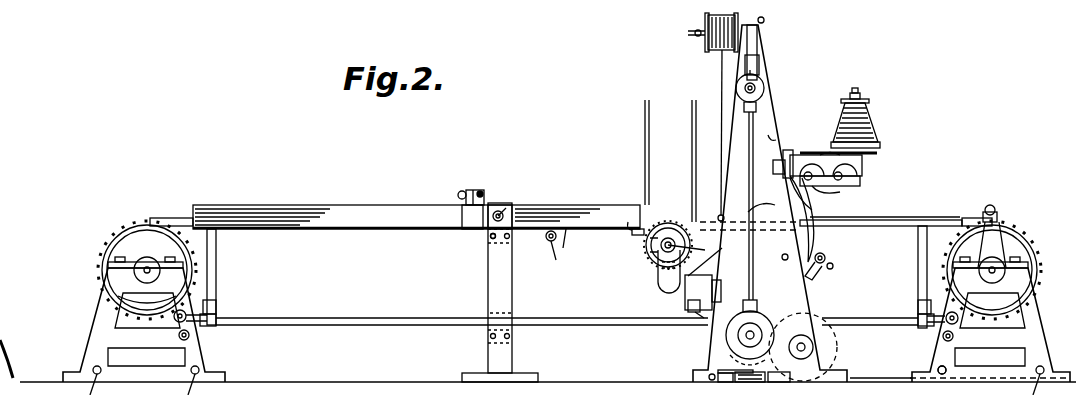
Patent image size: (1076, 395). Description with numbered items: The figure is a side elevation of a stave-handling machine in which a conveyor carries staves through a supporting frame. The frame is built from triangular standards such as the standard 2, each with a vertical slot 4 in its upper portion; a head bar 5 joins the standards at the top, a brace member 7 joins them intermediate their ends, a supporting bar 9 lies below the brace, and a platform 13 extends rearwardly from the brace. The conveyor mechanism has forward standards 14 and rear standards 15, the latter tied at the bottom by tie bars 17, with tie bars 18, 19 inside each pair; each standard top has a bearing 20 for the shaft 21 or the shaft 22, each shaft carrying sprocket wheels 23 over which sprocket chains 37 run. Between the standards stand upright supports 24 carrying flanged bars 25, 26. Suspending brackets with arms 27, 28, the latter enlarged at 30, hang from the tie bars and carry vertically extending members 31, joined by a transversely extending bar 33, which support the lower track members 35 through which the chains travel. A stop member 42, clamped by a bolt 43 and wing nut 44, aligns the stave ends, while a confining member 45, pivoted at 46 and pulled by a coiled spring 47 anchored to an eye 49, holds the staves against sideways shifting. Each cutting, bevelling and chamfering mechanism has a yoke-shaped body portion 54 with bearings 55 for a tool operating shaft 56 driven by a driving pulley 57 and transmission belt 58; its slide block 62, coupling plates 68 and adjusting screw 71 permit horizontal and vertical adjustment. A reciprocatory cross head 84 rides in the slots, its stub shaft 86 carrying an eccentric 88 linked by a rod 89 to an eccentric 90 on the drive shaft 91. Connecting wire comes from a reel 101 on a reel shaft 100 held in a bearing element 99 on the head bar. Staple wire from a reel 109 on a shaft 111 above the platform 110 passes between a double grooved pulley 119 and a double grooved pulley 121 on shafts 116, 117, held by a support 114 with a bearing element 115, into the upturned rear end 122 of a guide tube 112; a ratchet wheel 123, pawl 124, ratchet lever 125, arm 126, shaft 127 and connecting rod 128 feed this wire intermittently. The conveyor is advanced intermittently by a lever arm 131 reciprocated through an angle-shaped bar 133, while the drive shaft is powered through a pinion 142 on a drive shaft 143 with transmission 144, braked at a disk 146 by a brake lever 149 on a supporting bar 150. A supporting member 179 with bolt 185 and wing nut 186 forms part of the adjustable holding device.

The standard 2 is at (766, 130).
The slot 4 is at (758, 60).
The head bar 5 is at (758, 37).
The brace member 7 is at (766, 137).
The supporting bar 9 is at (722, 292).
The platform 13 is at (878, 153).
The forward standard 14 is at (197, 355).
The rear standard 15 is at (1035, 338).
The tie bar 17 is at (940, 367).
The tie bar 18 is at (197, 324).
The tie bar 19 is at (179, 336).
The bearing 20 is at (138, 276).
The shaft 21 is at (149, 267).
The shaft 22 is at (993, 268).
The sprocket wheel 23 is at (123, 242).
The upright support 24 is at (512, 287).
The flanged bar 25 is at (490, 240).
The flanged bar 26 is at (510, 312).
The arm 27 is at (216, 304).
The arm 28 is at (230, 330).
The enlargement 30 is at (896, 226).
The vertically extending member 31 is at (218, 289).
The transversely extending bar 33 is at (218, 240).
The lower track member 35 is at (343, 318).
The sprocket chain 37 is at (180, 220).
The stop member 42 is at (305, 205).
The bolt 43 is at (498, 210).
The wing nut 44 is at (504, 212).
The confining member 45 is at (574, 243).
The pivot 46 is at (628, 224).
The coiled spring 47 is at (556, 257).
The eye 49 is at (549, 241).
The yoke-shaped body portion 54 is at (664, 282).
The bearing 55 is at (640, 236).
The tool operating shaft 56 is at (655, 262).
The driving pulley 57 is at (669, 222).
The transmission belt 58 is at (691, 149).
The slide block 62 is at (712, 278).
The coupling plate 68 is at (686, 304).
The adjusting screw 71 is at (695, 318).
The reciprocatory cross head 84 is at (756, 70).
The stub shaft 86 is at (755, 90).
The eccentric 88 is at (762, 84).
The rod 89 is at (749, 150).
The eccentric 90 is at (750, 312).
The drive shaft 91 is at (745, 340).
The bearing element 99 is at (764, 20).
The reel shaft 100 is at (704, 30).
The reel 101 is at (708, 47).
The reel 109 is at (879, 142).
The platform 110 is at (862, 160).
The shaft 111 is at (858, 93).
The guide tube 112 is at (748, 207).
The support 114 is at (844, 170).
The bearing element 115 is at (840, 190).
The shaft 116 is at (778, 164).
The shaft 117 is at (828, 152).
The double grooved pulley 119 is at (798, 210).
The double grooved pulley 121 is at (850, 184).
The upturned rear end 122 is at (812, 206).
The ratchet wheel 123 is at (795, 210).
The pawl 124 is at (790, 150).
The ratchet lever 125 is at (815, 236).
The arm 126 is at (826, 257).
The shaft 127 is at (830, 258).
The connecting rod 128 is at (818, 274).
The lever arm 131 is at (993, 210).
The angle-shaped bar 133 is at (928, 220).
The pinion 142 is at (830, 342).
The drive shaft 143 is at (798, 342).
The transmission 144 is at (848, 374).
The disk 146 is at (735, 372).
The brake lever 149 is at (716, 375).
The supporting bar 150 is at (704, 381).
The supporting member 179 is at (462, 218).
The bolt 185 is at (468, 195).
The wing nut 186 is at (482, 194).